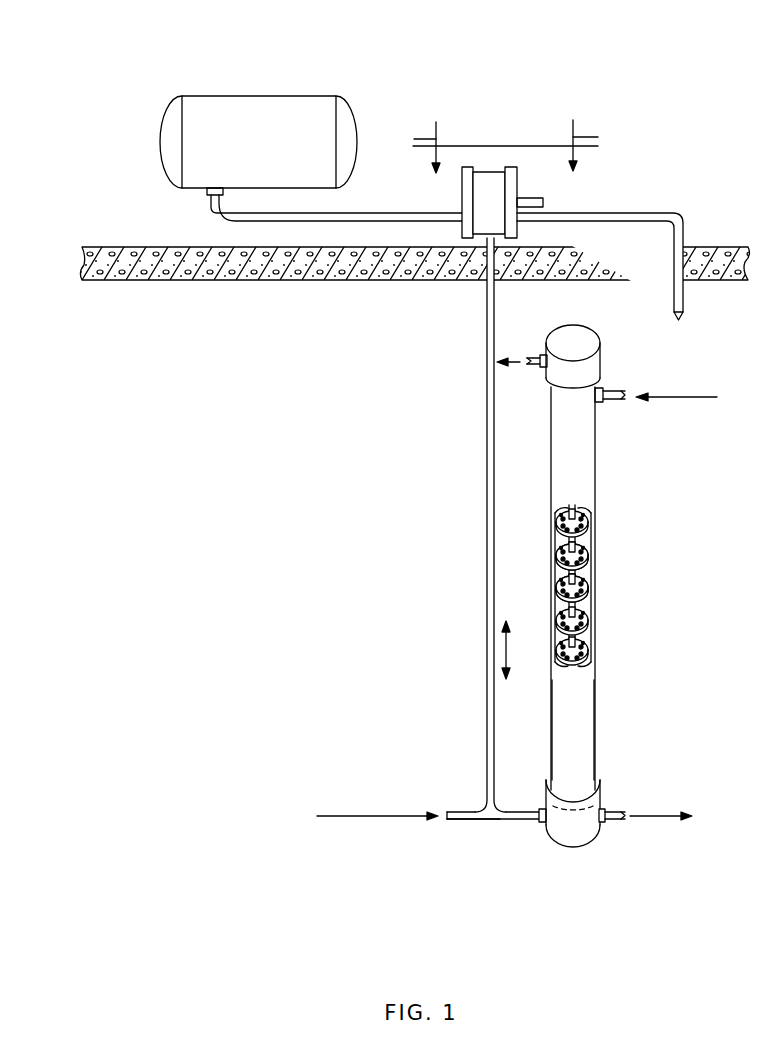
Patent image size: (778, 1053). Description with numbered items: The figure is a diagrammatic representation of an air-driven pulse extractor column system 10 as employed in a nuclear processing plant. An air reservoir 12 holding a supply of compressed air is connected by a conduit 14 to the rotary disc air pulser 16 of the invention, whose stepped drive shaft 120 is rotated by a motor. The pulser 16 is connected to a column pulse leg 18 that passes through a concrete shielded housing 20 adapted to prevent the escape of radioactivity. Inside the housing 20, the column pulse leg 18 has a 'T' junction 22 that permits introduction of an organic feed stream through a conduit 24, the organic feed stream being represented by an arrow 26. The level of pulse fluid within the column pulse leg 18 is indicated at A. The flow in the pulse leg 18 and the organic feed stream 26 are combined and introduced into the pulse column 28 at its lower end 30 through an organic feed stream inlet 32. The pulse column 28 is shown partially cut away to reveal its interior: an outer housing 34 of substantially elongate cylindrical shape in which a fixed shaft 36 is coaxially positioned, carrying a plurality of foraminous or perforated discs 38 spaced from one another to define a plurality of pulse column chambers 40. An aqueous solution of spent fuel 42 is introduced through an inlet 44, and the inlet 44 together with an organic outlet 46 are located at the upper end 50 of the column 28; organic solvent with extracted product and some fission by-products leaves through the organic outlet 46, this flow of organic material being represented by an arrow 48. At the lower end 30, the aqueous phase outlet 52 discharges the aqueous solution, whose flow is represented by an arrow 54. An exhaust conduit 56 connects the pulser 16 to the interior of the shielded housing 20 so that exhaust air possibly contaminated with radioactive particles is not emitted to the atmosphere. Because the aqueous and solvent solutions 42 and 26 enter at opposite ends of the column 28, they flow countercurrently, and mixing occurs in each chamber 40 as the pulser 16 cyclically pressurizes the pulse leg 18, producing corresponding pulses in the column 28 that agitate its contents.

The air-driven pulse extractor column system 10 is at (108, 170).
The air reservoir 12 is at (230, 96).
The conduit 14 is at (357, 213).
The rotary disc air pulser 16 is at (489, 172).
The stepped drive shaft 120 is at (535, 198).
The column pulse leg 18 is at (484, 480).
The concrete shielded housing 20 is at (312, 282).
The 'T' junction 22 is at (490, 822).
The conduit 24 is at (447, 822).
The organic feed stream 26 is at (372, 815).
The pulse column 28 is at (602, 718).
The lower end 30 is at (594, 846).
The organic feed stream inlet 32 is at (540, 823).
The outer housing 34 is at (586, 476).
The fixed shaft 36 is at (572, 606).
The foraminous or perforated discs 38 is at (577, 548).
The pulse column chambers 40 is at (582, 577).
The aqueous solution of spent fuel 42 is at (690, 397).
The inlet 44 is at (604, 403).
The organic outlet 46 is at (540, 367).
The flow of organic material 48 is at (519, 360).
The upper end 50 is at (614, 362).
The aqueous phase outlet 52 is at (605, 808).
The flow of aqueous solution 54 is at (660, 816).
The exhaust conduit 56 is at (636, 213).
The level of pulse fluid A is at (490, 651).